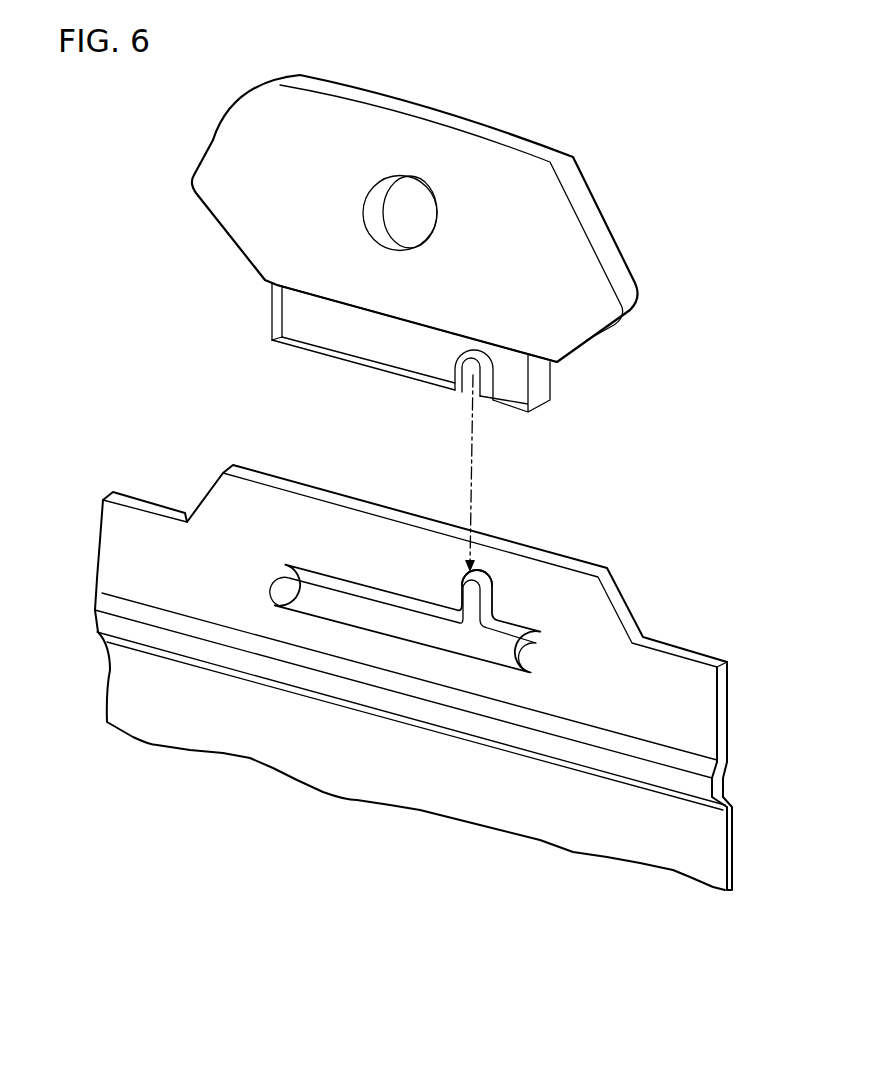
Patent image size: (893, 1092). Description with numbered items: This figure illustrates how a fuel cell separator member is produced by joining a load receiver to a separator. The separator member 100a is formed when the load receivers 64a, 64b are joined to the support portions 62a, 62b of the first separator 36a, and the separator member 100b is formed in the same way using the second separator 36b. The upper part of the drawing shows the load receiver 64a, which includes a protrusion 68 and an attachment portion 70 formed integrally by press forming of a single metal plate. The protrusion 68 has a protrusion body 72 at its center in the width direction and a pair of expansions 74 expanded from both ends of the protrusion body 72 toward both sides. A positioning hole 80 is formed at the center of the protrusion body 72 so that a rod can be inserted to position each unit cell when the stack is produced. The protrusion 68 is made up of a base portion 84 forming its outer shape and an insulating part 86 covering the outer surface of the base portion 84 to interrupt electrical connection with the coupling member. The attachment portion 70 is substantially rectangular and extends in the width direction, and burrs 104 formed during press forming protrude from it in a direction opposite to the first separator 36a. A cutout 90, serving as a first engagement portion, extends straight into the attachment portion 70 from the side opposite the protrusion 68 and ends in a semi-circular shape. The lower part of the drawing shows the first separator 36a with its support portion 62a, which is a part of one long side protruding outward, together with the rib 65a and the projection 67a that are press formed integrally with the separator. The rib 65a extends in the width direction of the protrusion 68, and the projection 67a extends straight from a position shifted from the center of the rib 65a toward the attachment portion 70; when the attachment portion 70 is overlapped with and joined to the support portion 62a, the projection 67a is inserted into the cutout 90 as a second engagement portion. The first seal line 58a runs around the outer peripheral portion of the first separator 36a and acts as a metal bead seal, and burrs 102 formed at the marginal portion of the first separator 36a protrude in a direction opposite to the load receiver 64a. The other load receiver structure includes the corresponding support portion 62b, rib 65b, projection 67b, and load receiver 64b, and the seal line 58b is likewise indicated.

The separator member 100a is at (396, 502).
The separator member 100b is at (140, 131).
The load receiver 64a is at (431, 243).
The load receiver 64b is at (578, 158).
The protrusion body 72 is at (390, 122).
The expansions 74 is at (224, 133).
The positioning hole 80 is at (423, 223).
The protrusion 68 is at (196, 288).
The insulating part 86 is at (242, 267).
The base portion 84 is at (289, 323).
The burrs 104 is at (302, 346).
The attachment portion 70 is at (393, 347).
The cutout 90 is at (468, 372).
The first separator 36a is at (420, 695).
The second separator 36b is at (608, 850).
The support portion 62a is at (415, 549).
The support portion 62b is at (217, 497).
The projection 67a is at (537, 543).
The projection 67b is at (485, 587).
The rib 65a is at (470, 601).
The rib 65b is at (527, 660).
The burrs 102 is at (731, 667).
The first seal line 58a is at (703, 845).
The rail end flange 58b is at (693, 783).